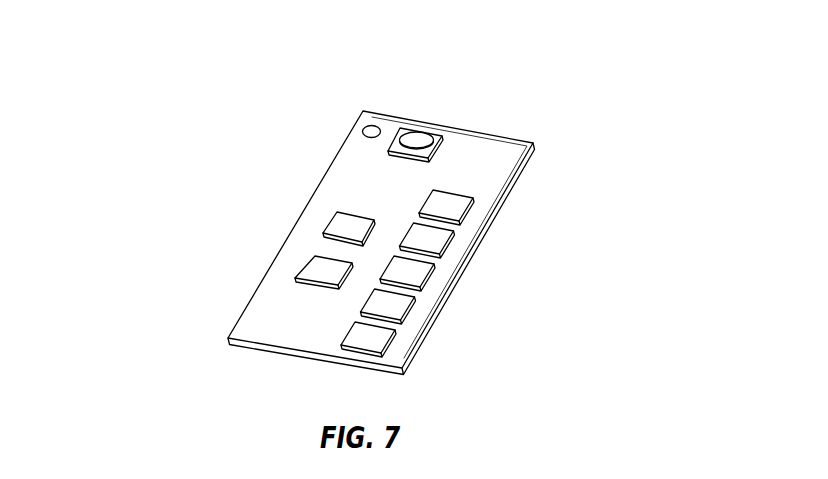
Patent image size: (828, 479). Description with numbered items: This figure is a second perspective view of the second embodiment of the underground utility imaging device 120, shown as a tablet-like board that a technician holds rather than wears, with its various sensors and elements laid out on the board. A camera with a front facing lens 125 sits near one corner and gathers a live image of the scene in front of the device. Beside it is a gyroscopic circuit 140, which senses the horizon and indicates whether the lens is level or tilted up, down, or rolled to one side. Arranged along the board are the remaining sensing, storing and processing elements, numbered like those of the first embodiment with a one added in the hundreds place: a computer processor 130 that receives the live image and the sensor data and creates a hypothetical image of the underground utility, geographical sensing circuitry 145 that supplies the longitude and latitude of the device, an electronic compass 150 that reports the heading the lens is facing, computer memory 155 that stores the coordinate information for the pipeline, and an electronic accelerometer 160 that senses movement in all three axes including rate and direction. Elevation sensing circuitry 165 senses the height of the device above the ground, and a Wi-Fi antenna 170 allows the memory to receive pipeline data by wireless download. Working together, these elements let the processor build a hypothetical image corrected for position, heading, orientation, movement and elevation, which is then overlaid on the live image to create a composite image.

The underground utility imaging device 120 is at (568, 92).
The front facing lens 125 is at (367, 126).
The gyroscopic circuit 140 is at (418, 135).
The computer processor 130 is at (458, 205).
The geographical sensing circuitry 145 is at (442, 240).
The electronic compass 150 is at (417, 272).
The computer memory 155 is at (397, 303).
The electronic accelerometer 160 is at (378, 337).
The elevation sensing circuitry 165 is at (343, 225).
The Wi-Fi antenna 170 is at (320, 272).